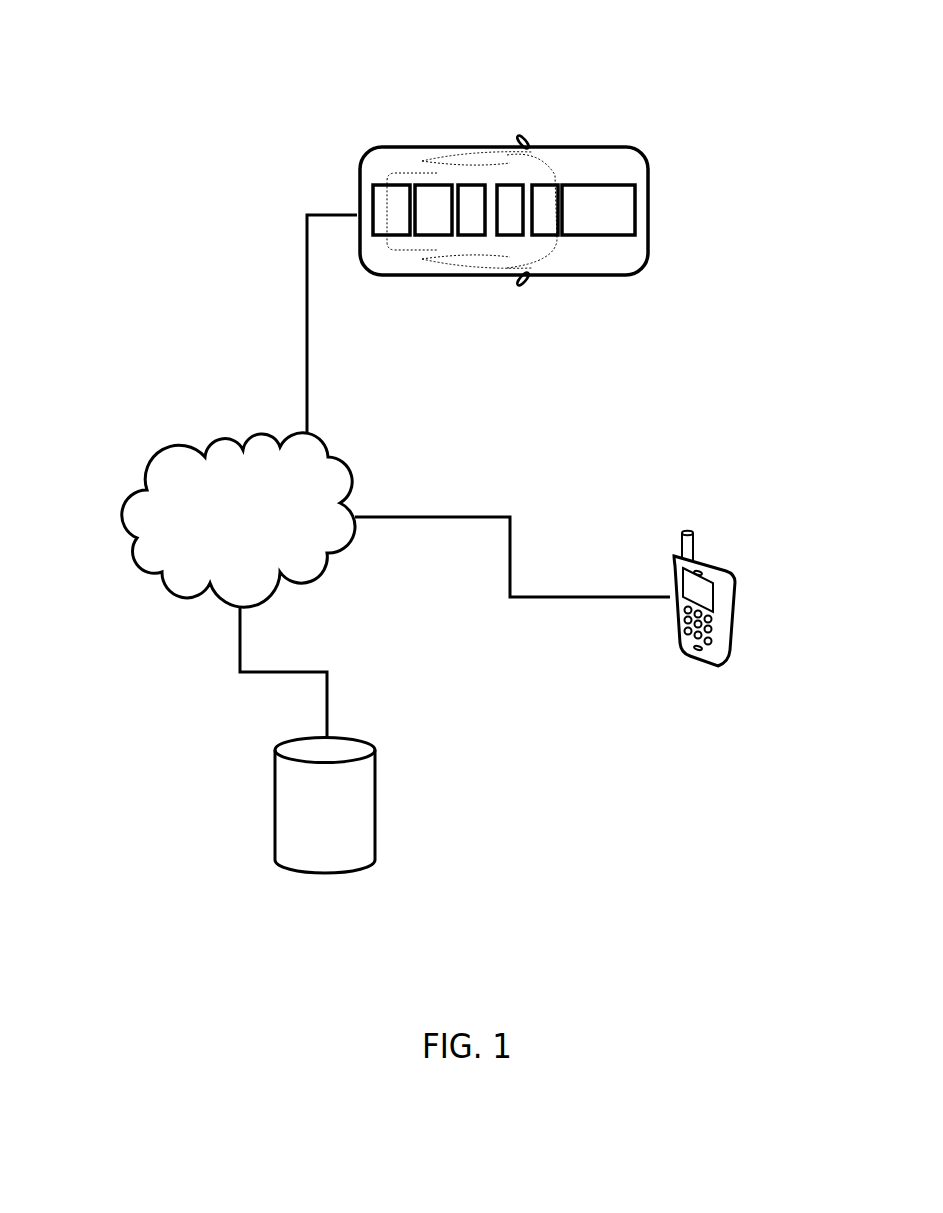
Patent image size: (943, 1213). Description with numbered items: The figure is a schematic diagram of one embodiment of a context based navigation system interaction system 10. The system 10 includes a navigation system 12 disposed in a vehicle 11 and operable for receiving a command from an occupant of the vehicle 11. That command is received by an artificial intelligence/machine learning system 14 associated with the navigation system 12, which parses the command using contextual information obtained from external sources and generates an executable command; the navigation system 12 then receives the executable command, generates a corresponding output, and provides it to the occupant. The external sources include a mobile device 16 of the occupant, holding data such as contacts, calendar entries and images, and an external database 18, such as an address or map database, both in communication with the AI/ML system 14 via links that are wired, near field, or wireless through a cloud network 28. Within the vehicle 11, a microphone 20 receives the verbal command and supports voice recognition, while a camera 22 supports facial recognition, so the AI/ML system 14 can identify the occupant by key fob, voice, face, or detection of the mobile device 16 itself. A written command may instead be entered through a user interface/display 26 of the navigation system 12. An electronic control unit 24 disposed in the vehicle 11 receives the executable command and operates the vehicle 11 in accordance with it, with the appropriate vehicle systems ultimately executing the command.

The context based navigation system interaction system 10 is at (690, 375).
The vehicle 11 is at (573, 147).
The navigation system 12 is at (603, 185).
The artificial intelligence/machine learning system 14 is at (388, 185).
The electronic control unit 24 is at (438, 185).
The camera 22 is at (472, 235).
The microphone 20 is at (510, 235).
The user interface/display 26 is at (545, 235).
The mobile device 16 is at (710, 557).
The external database 18 is at (353, 738).
The cloud network 28 is at (133, 565).